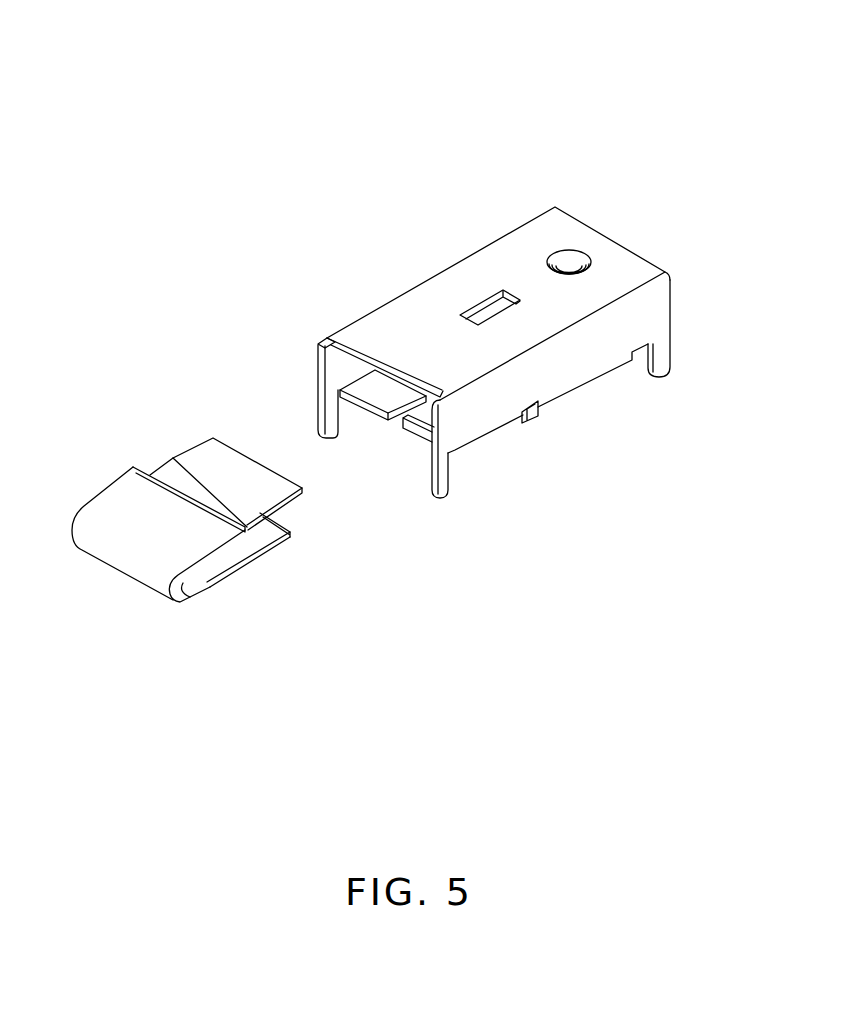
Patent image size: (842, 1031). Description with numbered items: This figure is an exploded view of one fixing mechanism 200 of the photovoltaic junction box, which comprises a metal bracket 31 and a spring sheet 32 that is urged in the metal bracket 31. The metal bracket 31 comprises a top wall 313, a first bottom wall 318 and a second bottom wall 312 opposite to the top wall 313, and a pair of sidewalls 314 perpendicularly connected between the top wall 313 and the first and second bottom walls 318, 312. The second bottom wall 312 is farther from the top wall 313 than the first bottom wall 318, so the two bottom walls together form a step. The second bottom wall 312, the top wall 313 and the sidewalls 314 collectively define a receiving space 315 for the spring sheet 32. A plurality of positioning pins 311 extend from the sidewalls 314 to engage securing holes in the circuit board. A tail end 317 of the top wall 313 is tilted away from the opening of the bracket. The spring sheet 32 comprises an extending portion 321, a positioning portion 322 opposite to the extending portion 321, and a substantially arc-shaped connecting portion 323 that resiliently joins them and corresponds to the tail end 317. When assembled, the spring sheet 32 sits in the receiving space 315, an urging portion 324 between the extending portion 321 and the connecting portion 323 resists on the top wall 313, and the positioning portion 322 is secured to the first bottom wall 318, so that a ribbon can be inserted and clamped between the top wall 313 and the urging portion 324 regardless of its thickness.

The fixing mechanism 200 is at (408, 40).
The metal bracket 31 is at (505, 467).
The positioning pins 311 is at (443, 491).
The second bottom wall 312 is at (522, 424).
The top wall 313 is at (505, 273).
The sidewalls 314 is at (326, 336).
The receiving space 315 is at (375, 390).
The tail end 317 is at (356, 352).
The first bottom wall 318 is at (417, 433).
The spring sheet 32 is at (105, 475).
The extending portion 321 is at (178, 477).
The positioning portion 322 is at (223, 547).
The connecting portion 323 is at (147, 553).
The urging portion 324 is at (273, 537).